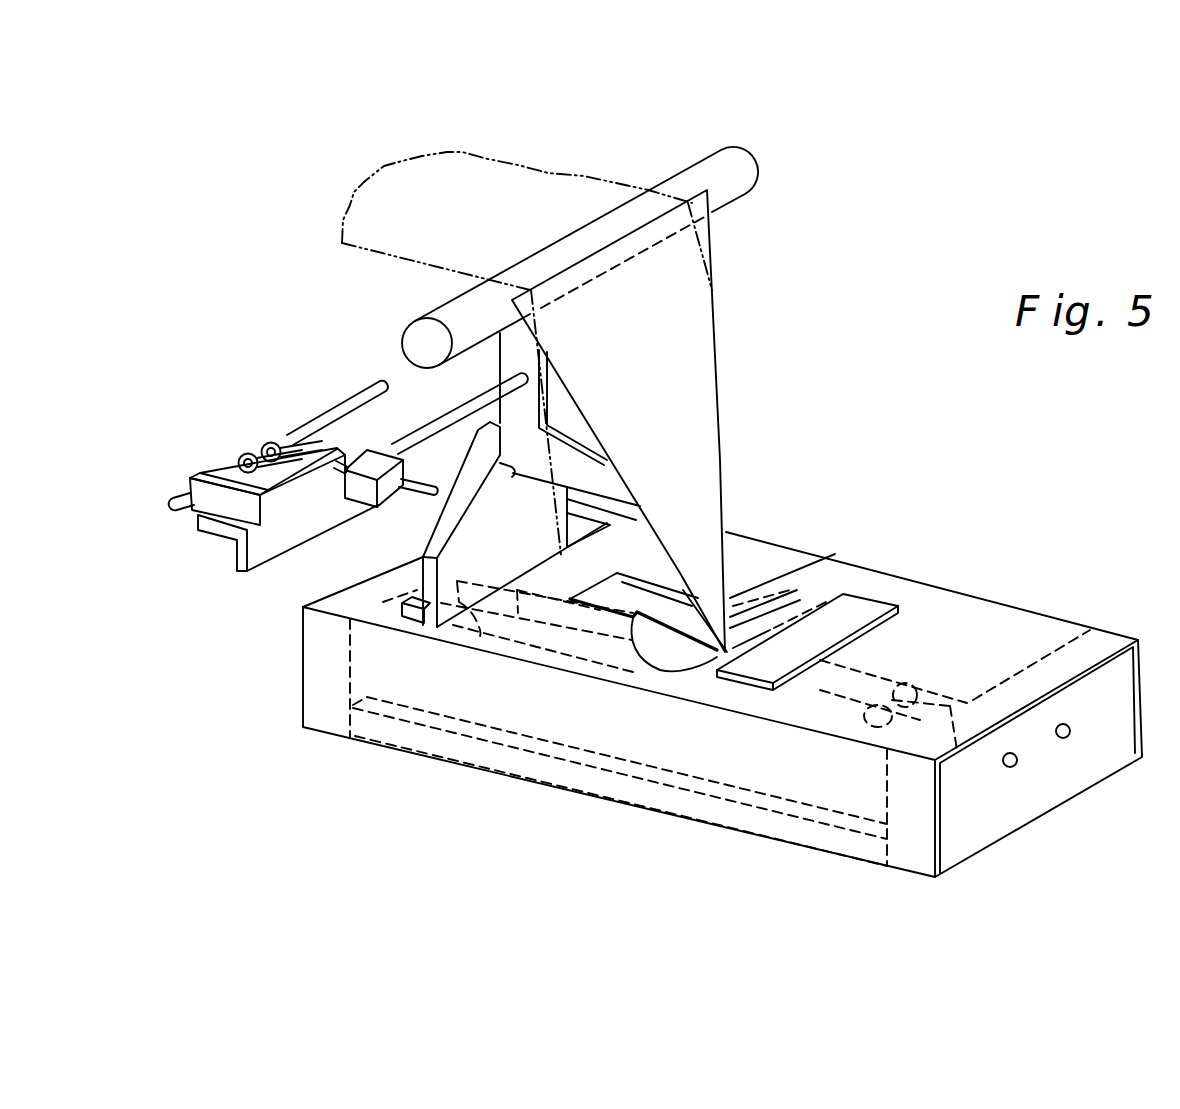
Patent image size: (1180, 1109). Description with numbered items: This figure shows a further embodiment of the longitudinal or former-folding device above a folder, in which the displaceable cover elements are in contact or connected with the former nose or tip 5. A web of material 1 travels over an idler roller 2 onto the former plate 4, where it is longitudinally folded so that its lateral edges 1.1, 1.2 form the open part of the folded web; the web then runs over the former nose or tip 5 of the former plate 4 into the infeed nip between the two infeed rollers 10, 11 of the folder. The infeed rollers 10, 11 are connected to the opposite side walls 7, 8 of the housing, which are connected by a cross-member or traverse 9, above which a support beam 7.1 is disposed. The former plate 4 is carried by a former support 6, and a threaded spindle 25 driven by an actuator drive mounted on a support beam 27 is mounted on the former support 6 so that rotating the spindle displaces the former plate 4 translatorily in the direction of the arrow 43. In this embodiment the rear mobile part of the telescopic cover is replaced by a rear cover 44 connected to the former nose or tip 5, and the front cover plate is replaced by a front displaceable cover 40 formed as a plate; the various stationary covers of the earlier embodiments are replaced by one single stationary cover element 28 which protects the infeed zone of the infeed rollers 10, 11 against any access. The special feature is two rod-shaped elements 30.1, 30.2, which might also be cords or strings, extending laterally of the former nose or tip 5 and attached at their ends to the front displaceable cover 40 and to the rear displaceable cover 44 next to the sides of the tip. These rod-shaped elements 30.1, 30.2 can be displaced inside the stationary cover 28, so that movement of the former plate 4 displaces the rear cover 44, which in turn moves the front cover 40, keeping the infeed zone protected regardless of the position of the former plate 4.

The web of material 1 is at (540, 190).
The lateral edge of the web of material 1.1 is at (543, 337).
The lateral edge of the web of material 1.2 is at (710, 253).
The idler roller 2 is at (407, 342).
The former plate 4 is at (176, 453).
The former nose or tip 5 is at (717, 607).
The former support 6 is at (503, 377).
The side wall 7 is at (320, 720).
The support beam 7.1 is at (472, 445).
The side wall 8 is at (1000, 807).
The cross-member or traverse 9 is at (408, 718).
The infeed roller 10 is at (860, 745).
The infeed roller 11 is at (950, 733).
The threaded spindle 25 is at (270, 442).
The support beam 27 is at (268, 550).
The stationary cover element 28 is at (520, 720).
The rod-shaped element 30.1 is at (667, 636).
The rod-shaped element 30.2 is at (793, 607).
The front displaceable cover 40 is at (847, 617).
The arrow 43 is at (457, 473).
The rear cover 44 is at (640, 603).